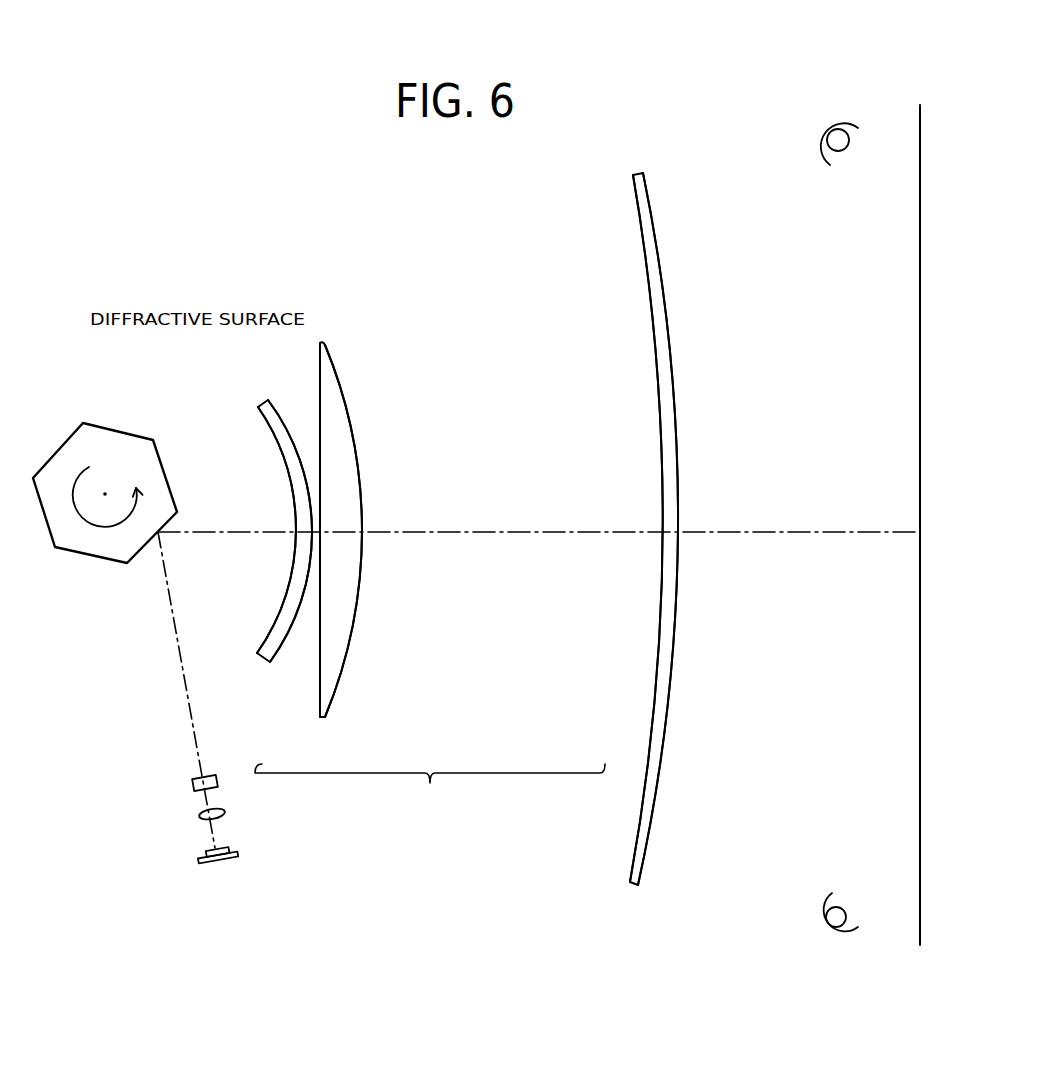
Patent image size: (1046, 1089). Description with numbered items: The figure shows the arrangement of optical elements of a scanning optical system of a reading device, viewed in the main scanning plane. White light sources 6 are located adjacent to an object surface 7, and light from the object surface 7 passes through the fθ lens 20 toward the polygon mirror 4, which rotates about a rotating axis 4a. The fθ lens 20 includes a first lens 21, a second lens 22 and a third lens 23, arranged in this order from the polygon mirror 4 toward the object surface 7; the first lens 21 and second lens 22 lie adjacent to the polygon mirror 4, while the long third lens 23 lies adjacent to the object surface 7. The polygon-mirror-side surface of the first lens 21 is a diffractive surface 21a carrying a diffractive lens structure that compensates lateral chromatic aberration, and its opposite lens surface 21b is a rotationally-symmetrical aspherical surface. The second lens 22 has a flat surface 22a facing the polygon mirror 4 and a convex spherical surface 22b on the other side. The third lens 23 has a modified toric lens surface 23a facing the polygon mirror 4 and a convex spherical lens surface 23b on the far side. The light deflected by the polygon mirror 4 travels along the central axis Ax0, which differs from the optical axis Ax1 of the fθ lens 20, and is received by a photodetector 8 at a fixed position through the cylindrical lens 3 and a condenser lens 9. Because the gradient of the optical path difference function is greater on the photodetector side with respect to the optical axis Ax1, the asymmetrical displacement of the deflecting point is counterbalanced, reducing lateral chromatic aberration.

The cylindrical lens 3 is at (194, 785).
The polygon mirror 4 is at (100, 553).
The rotating axis 4a is at (105, 493).
The white light sources 6 is at (832, 140).
The object surface 7 is at (917, 783).
The photodetector 8 is at (200, 860).
The condenser lens 9 is at (200, 815).
The fθ lens 20 is at (430, 789).
The first lens 21 is at (262, 665).
The diffractive surface 21a is at (258, 413).
The lens surface 21b is at (270, 405).
The second lens 22 is at (318, 720).
The flat surface 22a is at (320, 388).
The convex spherical surface 22b is at (350, 419).
The third lens 23 is at (652, 755).
The lens surface 23a is at (637, 210).
The lens surface 23b is at (650, 208).
The central axis Ax0 is at (188, 708).
The optical axis Ax1 is at (768, 527).